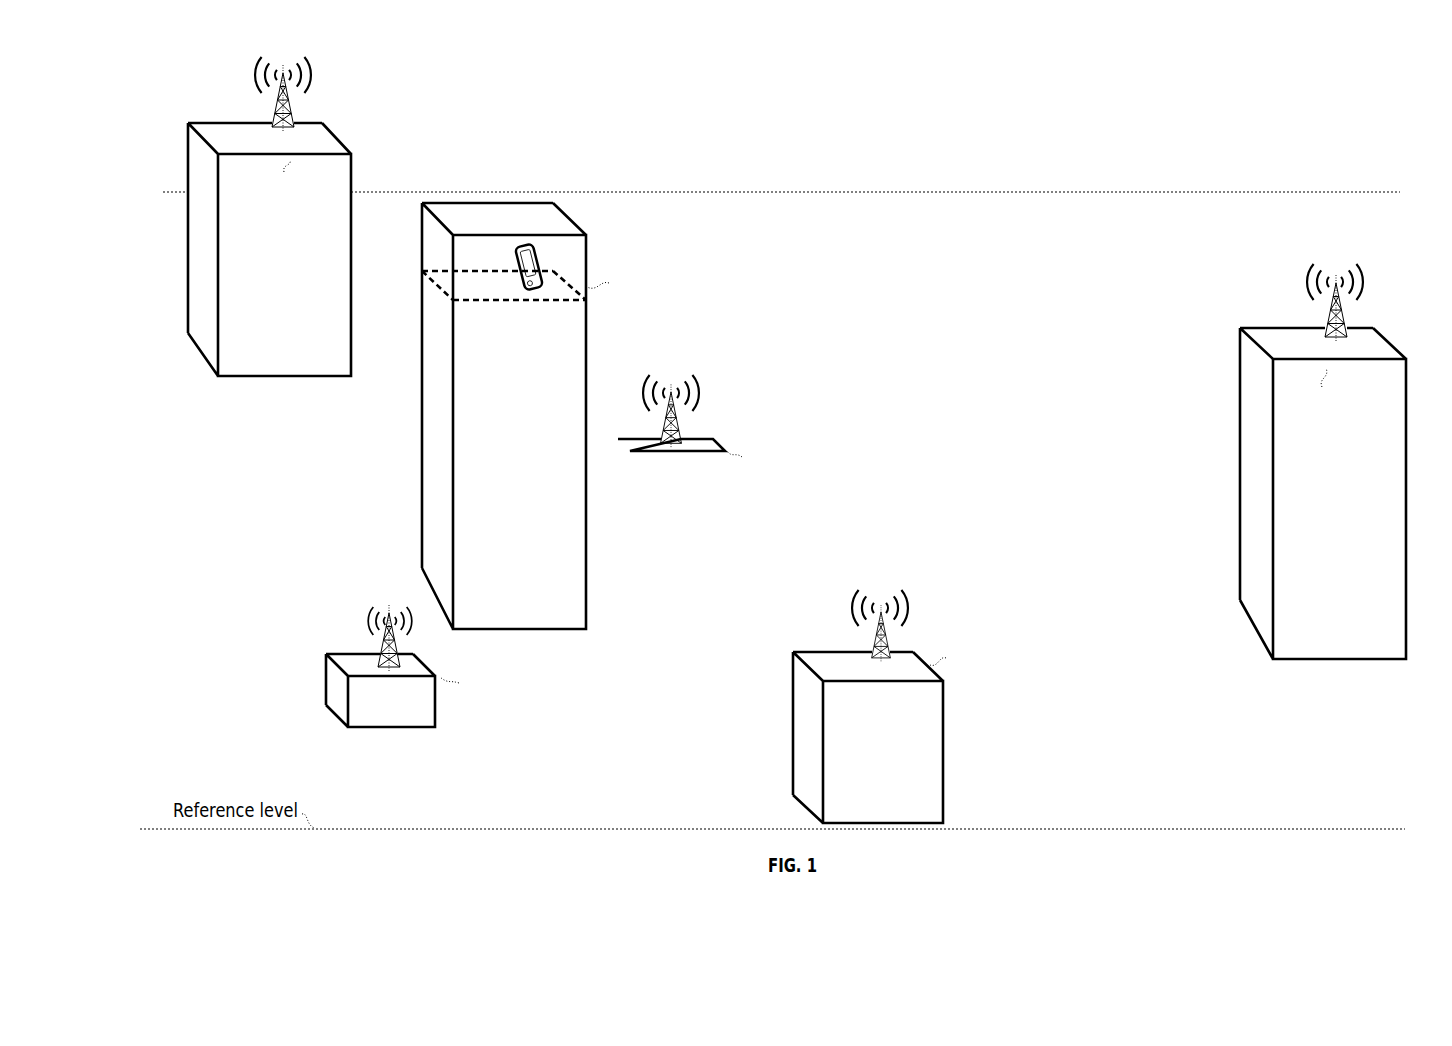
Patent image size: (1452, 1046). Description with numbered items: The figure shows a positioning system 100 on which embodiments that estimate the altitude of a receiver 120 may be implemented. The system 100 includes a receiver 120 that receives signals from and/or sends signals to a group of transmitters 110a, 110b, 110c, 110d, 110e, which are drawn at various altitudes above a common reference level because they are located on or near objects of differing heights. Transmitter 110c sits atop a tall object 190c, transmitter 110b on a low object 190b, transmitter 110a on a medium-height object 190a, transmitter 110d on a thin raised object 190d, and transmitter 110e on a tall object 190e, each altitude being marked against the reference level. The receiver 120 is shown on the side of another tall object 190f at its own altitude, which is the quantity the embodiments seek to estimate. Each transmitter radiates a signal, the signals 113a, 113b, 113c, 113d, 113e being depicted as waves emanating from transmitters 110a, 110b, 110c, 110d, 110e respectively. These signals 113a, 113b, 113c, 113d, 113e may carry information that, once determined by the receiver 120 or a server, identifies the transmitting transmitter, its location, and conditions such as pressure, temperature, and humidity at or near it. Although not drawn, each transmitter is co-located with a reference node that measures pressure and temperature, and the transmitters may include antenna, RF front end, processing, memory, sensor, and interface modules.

The positioning system 100 is at (1284, 115).
The transmitter 110a is at (870, 647).
The transmitter 110b is at (378, 648).
The transmitter 110c is at (293, 100).
The transmitter 110d is at (680, 422).
The transmitter 110e is at (1327, 322).
The signal 113a is at (856, 608).
The signal 113b is at (368, 613).
The signal 113c is at (256, 79).
The signal 113d is at (700, 373).
The signal 113e is at (1311, 272).
The receiver 120 is at (530, 292).
The object 190a is at (790, 756).
The object 190b is at (327, 707).
The object 190c is at (205, 368).
The object 190d is at (697, 455).
The object 190e is at (1330, 662).
The object 190f is at (588, 596).